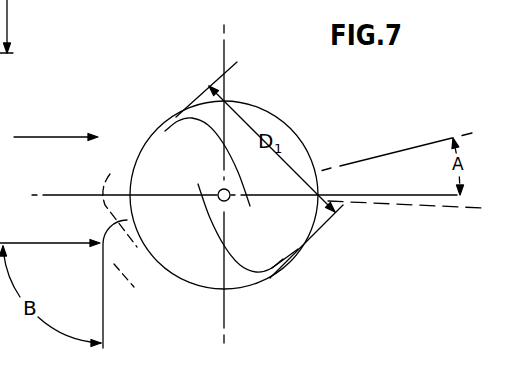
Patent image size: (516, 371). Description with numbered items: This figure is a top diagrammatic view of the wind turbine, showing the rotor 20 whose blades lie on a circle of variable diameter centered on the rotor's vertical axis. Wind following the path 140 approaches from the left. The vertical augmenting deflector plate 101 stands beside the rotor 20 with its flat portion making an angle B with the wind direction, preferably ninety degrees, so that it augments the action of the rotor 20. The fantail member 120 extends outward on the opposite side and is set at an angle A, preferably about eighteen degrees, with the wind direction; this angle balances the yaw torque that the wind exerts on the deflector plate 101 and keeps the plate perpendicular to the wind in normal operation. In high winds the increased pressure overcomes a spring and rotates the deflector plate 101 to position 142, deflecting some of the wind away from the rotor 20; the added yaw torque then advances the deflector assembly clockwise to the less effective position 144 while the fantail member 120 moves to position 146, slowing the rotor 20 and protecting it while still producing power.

The rotor 20 is at (272, 109).
The fantail member 120 is at (388, 153).
The wind path 140 is at (56, 138).
The advanced deflector assembly position 144 is at (102, 190).
The deflector plate 101 is at (102, 262).
The rotated deflector plate position 142 is at (115, 266).
The fantail member high-wind position 146 is at (462, 207).